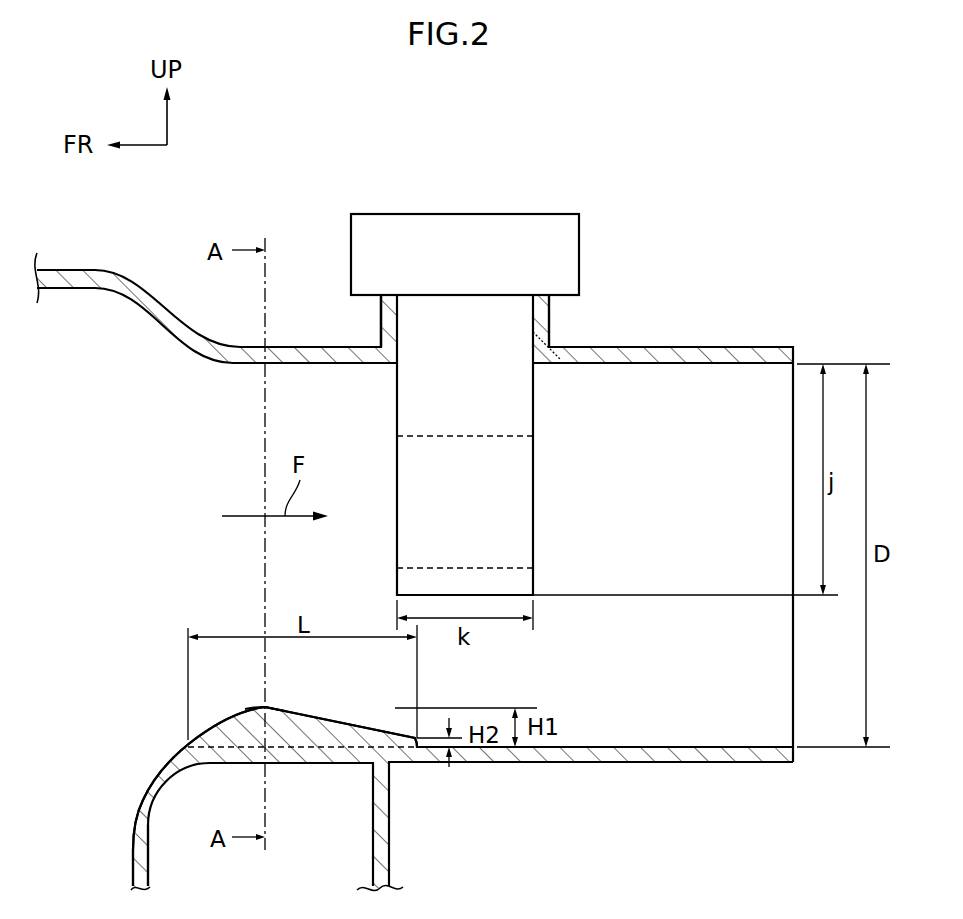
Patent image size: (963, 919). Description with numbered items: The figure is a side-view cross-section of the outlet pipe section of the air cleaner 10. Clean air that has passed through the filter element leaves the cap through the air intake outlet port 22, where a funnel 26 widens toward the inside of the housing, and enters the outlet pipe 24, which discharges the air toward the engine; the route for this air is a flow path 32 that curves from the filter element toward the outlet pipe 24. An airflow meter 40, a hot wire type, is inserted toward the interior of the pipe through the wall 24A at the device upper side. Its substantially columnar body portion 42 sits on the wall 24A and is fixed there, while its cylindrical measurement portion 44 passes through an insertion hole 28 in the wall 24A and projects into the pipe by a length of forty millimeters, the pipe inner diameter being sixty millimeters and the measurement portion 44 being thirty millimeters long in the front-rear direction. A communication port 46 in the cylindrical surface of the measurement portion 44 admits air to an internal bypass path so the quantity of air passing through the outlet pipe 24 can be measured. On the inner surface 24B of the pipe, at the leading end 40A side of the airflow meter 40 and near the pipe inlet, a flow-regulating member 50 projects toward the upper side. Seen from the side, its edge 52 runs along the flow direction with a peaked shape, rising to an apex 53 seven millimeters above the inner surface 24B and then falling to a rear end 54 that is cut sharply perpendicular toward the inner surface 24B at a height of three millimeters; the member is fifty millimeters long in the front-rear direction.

The air cleaner 10 is at (703, 131).
The air intake outlet port 22 is at (205, 348).
The outlet pipe 24 is at (668, 340).
The wall of the outlet pipe 24A is at (725, 347).
The inner surface of the outlet pipe 24B is at (622, 745).
The funnel 26 is at (133, 868).
The insertion hole 28 is at (396, 333).
The flow path 32 is at (88, 595).
The airflow meter 40 is at (445, 203).
The leading end of the airflow meter 40A is at (502, 596).
The body portion 42 is at (498, 233).
The measurement portion 44 is at (508, 350).
The communication port 46 is at (493, 436).
The flow-regulating member 50 is at (226, 704).
The edge 52 is at (358, 726).
The apex 53 is at (267, 707).
The rear end 54 is at (417, 738).